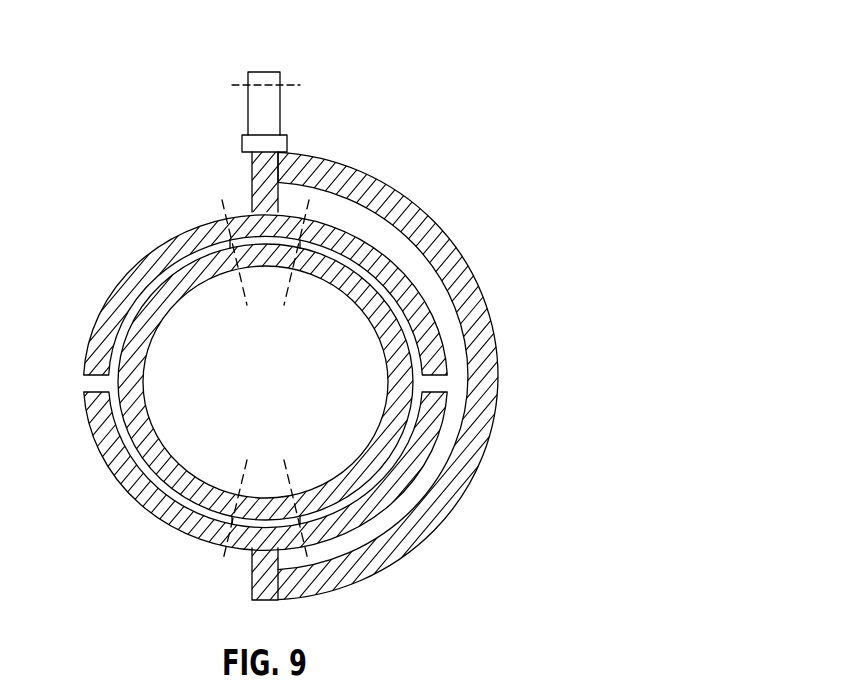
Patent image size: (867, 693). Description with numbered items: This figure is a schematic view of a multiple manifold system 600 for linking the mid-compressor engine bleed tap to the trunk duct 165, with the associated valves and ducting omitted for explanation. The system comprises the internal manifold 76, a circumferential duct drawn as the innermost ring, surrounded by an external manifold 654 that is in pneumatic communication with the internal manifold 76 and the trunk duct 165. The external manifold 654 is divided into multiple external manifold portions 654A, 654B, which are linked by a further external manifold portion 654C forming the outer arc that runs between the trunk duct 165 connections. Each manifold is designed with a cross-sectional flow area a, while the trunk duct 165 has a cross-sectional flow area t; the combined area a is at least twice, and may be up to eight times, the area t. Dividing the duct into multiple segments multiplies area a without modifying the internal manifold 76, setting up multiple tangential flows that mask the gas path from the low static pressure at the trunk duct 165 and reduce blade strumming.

The multiple manifold system 600 is at (433, 55).
The trunk duct 165 is at (248, 118).
The external manifold 654 is at (505, 293).
The external manifold portion 654A is at (172, 237).
The external manifold portion 654B is at (140, 506).
The external manifold portion 654C is at (395, 562).
The internal manifold 76 is at (197, 505).